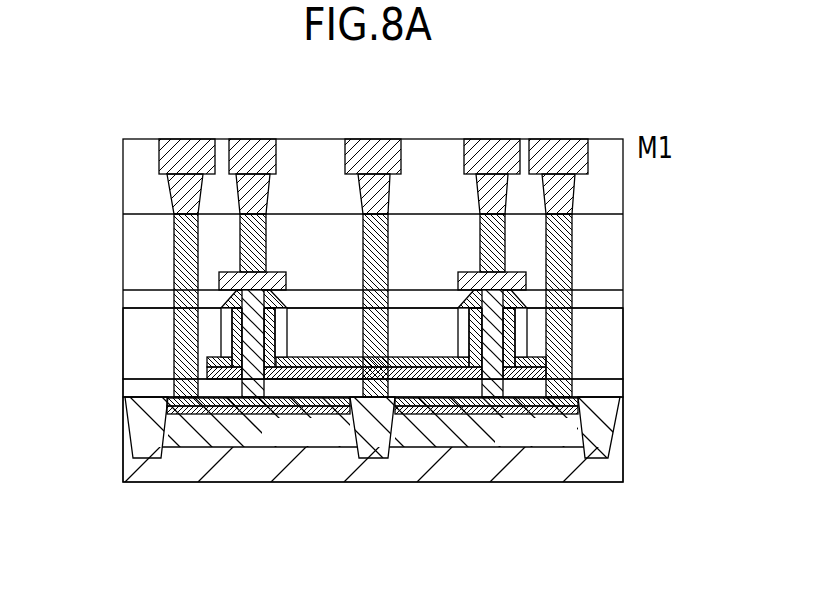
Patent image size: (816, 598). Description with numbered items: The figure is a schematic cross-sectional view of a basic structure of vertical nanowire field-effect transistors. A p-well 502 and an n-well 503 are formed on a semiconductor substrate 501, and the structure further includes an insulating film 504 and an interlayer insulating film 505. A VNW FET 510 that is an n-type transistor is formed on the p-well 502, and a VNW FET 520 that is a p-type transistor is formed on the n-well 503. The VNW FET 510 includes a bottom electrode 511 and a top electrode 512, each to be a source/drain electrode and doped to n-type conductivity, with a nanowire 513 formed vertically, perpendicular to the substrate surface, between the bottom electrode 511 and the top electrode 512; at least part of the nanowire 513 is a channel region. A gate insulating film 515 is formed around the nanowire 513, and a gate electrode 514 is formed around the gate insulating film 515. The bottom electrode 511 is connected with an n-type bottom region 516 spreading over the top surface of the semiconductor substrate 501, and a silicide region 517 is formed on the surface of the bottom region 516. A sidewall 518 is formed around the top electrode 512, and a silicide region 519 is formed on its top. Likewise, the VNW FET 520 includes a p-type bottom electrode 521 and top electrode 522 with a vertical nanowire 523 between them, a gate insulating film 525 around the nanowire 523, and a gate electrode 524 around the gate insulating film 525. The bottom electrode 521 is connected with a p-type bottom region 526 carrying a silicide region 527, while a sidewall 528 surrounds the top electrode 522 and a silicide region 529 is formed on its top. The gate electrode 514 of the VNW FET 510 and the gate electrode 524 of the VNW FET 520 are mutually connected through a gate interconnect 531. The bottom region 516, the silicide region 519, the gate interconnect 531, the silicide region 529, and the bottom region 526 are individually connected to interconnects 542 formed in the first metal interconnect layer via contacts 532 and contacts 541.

The semiconductor substrate 501 is at (610, 462).
The p-well 502 is at (236, 433).
The n-well 503 is at (473, 432).
The insulating film 504 is at (612, 384).
The interlayer insulating film 505 is at (610, 322).
The VNW FET 510 is at (304, 276).
The bottom electrode 511 is at (254, 398).
The top electrode 512 is at (262, 312).
The nanowire 513 is at (255, 342).
The gate electrode 514 is at (220, 322).
The gate insulating film 515 is at (222, 341).
The bottom region 516 is at (177, 414).
The silicide region 517 is at (202, 414).
The sidewall 518 is at (220, 302).
The silicide region 519 is at (220, 267).
The VNW FET 520 is at (438, 276).
The bottom electrode 521 is at (495, 398).
The top electrode 522 is at (483, 313).
The nanowire 523 is at (490, 342).
The gate electrode 524 is at (528, 322).
The gate insulating film 525 is at (528, 340).
The bottom region 526 is at (415, 414).
The silicide region 527 is at (442, 414).
The sidewall 528 is at (524, 305).
The silicide region 529 is at (524, 264).
The gate interconnect 531 is at (369, 398).
The contacts 532 is at (173, 225).
The contacts 541 is at (172, 190).
The interconnects 542 is at (158, 158).